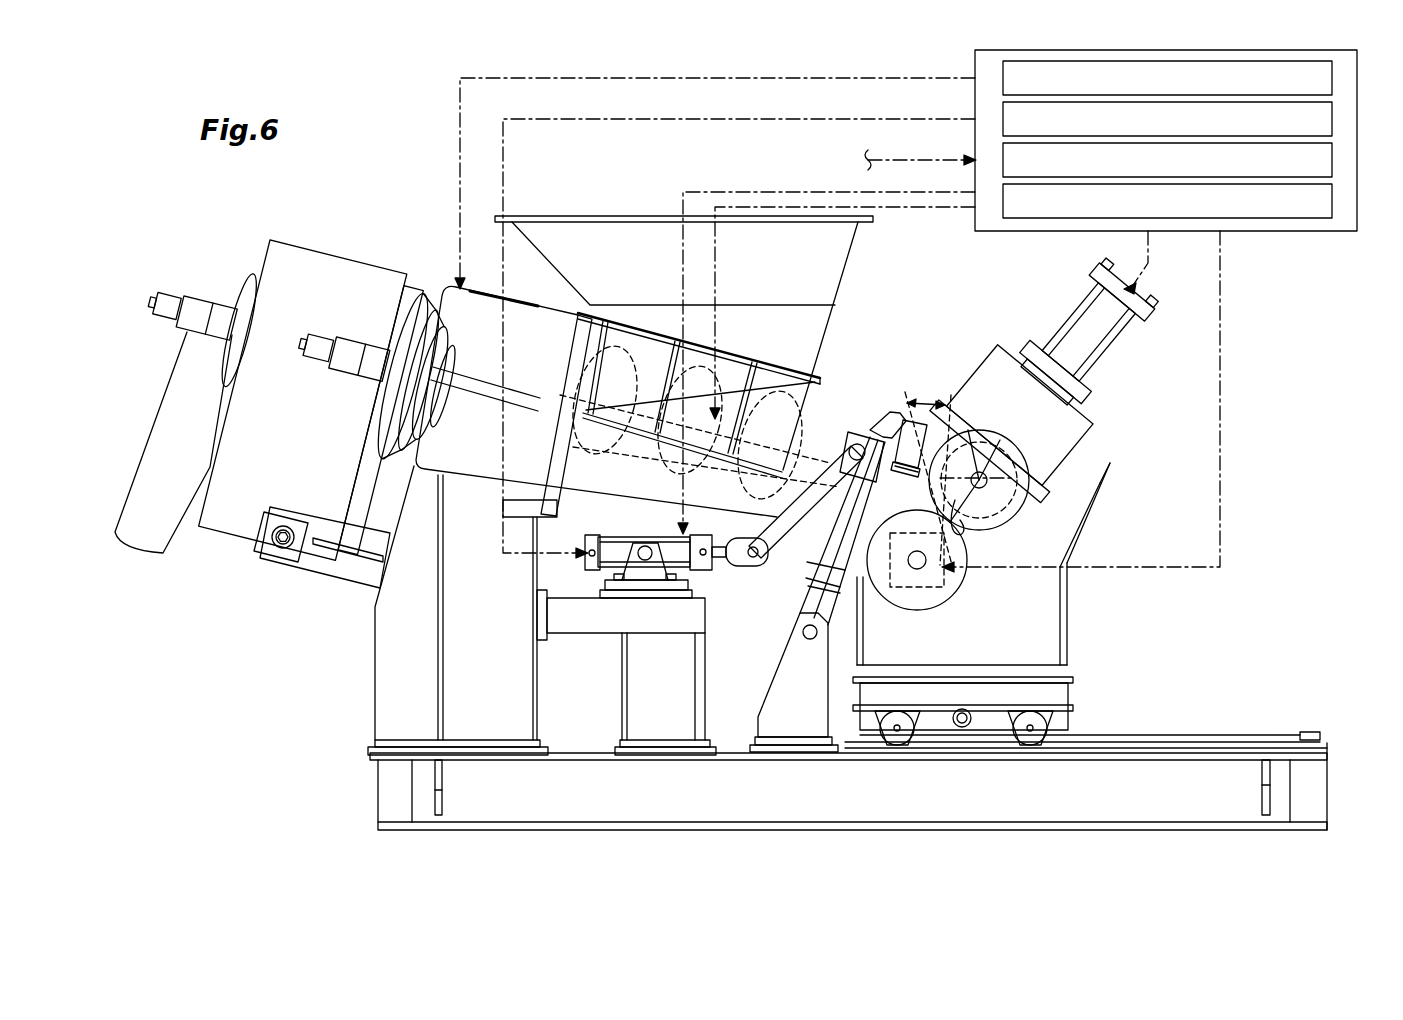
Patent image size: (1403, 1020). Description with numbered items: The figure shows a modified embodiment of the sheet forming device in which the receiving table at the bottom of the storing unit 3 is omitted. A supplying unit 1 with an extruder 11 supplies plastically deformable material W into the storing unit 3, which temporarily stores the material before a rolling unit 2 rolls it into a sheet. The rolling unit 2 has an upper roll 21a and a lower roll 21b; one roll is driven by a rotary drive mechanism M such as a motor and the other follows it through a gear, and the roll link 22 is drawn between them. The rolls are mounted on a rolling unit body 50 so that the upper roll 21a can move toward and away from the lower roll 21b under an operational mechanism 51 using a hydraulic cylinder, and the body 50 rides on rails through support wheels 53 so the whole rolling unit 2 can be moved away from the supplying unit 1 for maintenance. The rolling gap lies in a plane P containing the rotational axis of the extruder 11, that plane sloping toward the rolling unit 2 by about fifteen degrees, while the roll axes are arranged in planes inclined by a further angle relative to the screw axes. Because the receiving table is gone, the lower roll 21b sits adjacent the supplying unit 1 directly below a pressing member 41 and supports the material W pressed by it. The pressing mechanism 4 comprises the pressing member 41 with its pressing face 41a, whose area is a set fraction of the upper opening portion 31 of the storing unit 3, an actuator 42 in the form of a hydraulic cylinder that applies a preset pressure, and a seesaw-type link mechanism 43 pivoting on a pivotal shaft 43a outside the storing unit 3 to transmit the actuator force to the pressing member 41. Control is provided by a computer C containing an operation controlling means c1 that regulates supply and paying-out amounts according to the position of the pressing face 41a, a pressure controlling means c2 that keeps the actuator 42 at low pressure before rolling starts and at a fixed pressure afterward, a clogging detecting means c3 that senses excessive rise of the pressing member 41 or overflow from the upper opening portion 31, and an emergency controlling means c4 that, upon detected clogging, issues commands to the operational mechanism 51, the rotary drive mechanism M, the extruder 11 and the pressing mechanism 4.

The supplying unit 1 is at (590, 215).
The rolling unit 2 is at (1115, 391).
The storing unit 3 is at (858, 620).
The pressing mechanism 4 is at (746, 585).
The extruder 11 is at (582, 523).
The upper roll 21a is at (1015, 513).
The lower roll 21b is at (890, 618).
The roller link 22 is at (973, 536).
The upper opening portion 31 is at (940, 410).
The pressing member 41 is at (905, 418).
The pressing face 41a is at (935, 545).
The actuator 42 is at (616, 550).
The link mechanism 43 is at (803, 530).
The pivotal shaft 43a is at (857, 445).
The rolling unit body 50 is at (1070, 592).
The operational mechanism 51 is at (1065, 325).
The support wheels 53 is at (900, 745).
The computer C is at (1355, 232).
The operation controlling means c1 is at (1332, 92).
The pressure controlling means c2 is at (1332, 134).
The clogging detecting means c3 is at (1332, 175).
The emergency controlling means c4 is at (1332, 216).
The plane P is at (752, 569).
The material W is at (880, 600).
The rotary drive mechanism M is at (938, 598).